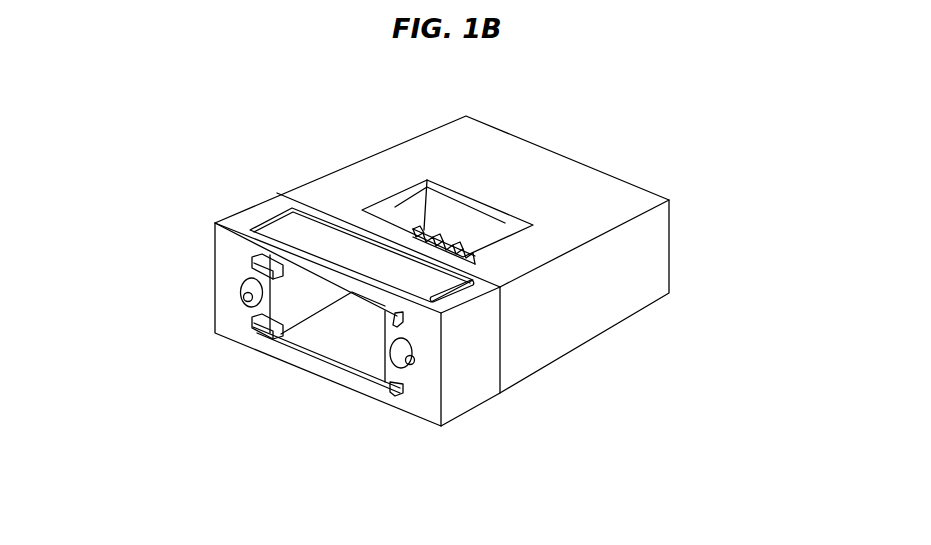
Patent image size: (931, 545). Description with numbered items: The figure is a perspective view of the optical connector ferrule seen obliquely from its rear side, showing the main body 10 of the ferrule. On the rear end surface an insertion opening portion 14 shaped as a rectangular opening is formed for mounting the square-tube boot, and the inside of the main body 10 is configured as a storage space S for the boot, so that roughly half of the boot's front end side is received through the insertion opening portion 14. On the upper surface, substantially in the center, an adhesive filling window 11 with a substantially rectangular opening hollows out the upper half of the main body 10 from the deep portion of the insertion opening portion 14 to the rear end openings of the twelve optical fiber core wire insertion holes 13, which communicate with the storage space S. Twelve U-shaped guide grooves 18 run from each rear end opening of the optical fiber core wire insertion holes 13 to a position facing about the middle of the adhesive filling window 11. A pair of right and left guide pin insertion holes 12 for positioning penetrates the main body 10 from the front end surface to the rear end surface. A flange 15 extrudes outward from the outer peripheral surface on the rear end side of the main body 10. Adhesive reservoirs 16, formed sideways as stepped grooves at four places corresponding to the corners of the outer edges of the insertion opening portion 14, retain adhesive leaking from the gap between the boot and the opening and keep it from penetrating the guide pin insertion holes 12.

The main body of the ferrule 10 is at (375, 145).
The adhesive filling window 11 is at (393, 200).
The guide pin insertion holes 12 is at (247, 305).
The optical fiber core wire insertion holes 13 is at (445, 240).
The insertion opening portion 14 is at (297, 334).
The flange 15 is at (488, 370).
The adhesive reservoirs 16 is at (251, 259).
The U-shaped guide grooves 18 is at (434, 233).
The storage space S is at (305, 295).